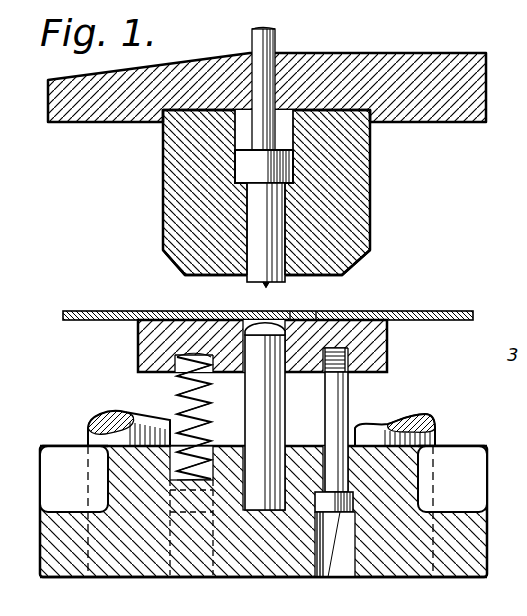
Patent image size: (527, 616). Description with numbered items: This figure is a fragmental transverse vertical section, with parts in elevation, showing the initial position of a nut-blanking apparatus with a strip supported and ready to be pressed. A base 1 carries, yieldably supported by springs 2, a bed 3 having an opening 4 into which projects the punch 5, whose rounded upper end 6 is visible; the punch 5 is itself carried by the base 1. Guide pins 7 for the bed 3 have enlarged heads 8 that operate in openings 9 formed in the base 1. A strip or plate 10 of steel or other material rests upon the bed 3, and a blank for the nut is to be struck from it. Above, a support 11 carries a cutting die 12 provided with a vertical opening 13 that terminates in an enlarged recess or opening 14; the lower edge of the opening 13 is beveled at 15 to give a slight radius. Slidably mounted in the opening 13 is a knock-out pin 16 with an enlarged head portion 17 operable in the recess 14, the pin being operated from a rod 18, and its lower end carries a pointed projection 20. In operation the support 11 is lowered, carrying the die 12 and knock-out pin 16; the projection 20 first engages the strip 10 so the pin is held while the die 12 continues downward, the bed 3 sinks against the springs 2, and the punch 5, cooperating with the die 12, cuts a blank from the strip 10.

The base 1 is at (487, 558).
The springs 2 is at (176, 391).
The bed 3 is at (388, 349).
The opening 4 is at (304, 313).
The punch 5 is at (270, 424).
The rounded upper end 6 is at (253, 326).
The guide pins 7 is at (348, 412).
The enlarged heads 8 is at (340, 513).
The openings 9 is at (346, 571).
The strip or plate 10 is at (416, 311).
The support 11 is at (478, 92).
The cutting die 12 is at (372, 148).
The vertical opening 13 is at (250, 210).
The enlarged recess or opening 14 is at (284, 125).
The bevel 15 is at (198, 278).
The knock-out pin 16 is at (284, 218).
The enlarged head portion 17 is at (240, 158).
The rod 18 is at (274, 31).
The pointed projection 20 is at (267, 284).